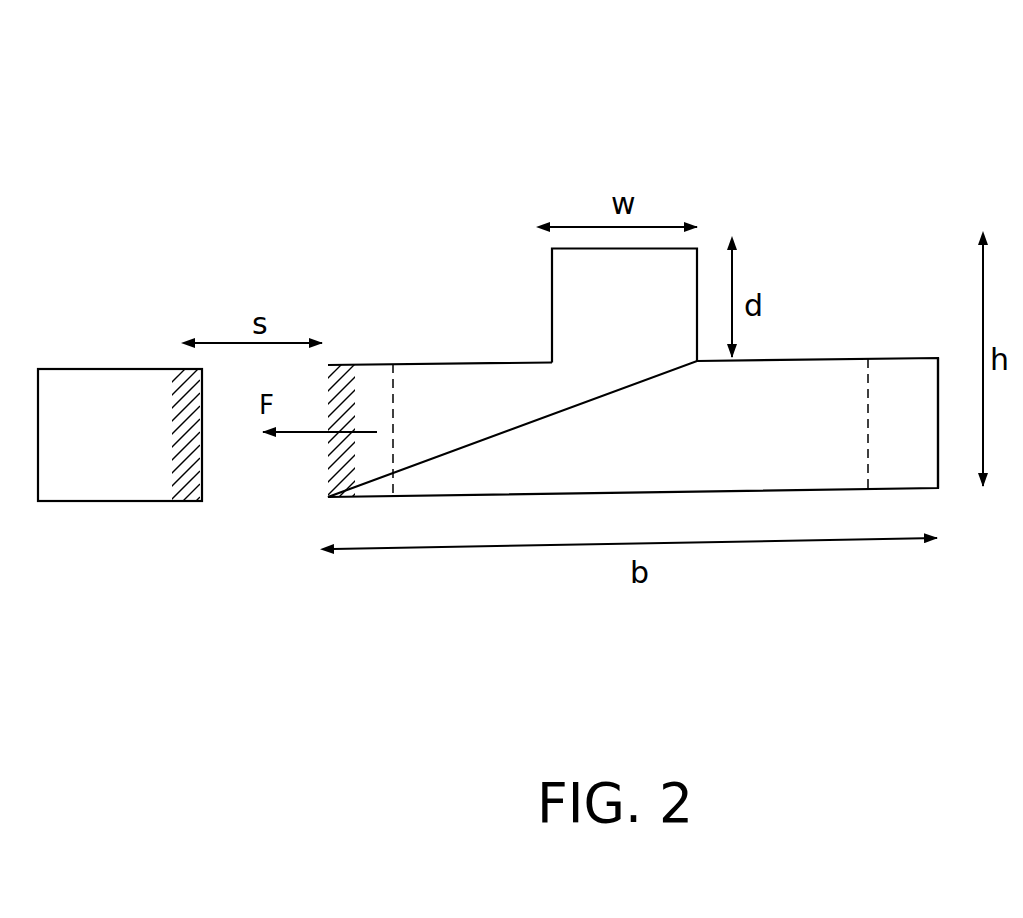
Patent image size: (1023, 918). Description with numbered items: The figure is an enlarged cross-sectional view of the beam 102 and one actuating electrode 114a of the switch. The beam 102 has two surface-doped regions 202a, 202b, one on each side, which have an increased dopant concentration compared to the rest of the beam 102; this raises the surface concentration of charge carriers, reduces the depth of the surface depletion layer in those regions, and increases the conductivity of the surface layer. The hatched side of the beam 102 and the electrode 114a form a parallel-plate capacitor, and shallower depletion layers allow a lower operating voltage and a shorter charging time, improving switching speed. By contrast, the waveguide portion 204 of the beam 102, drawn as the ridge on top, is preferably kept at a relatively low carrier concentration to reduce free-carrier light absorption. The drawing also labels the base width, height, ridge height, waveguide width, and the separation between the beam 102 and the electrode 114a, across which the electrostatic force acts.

The beam 102 is at (690, 187).
The waveguide portion 204 is at (590, 372).
The surface-doped region 202a is at (363, 383).
The surface-doped region 202b is at (907, 375).
The electrode 114a is at (123, 390).